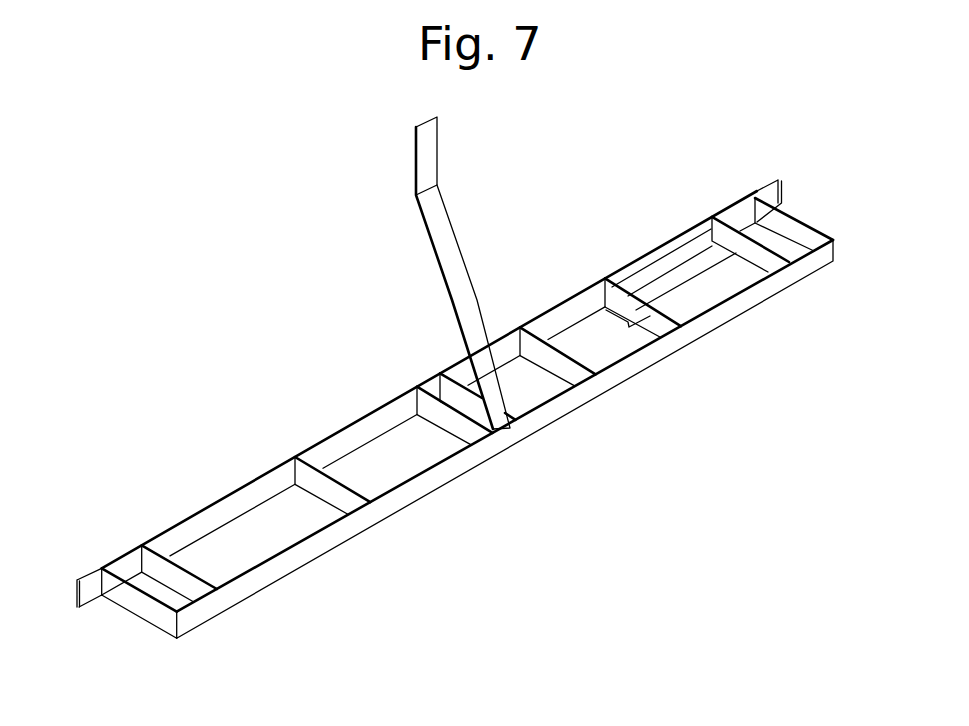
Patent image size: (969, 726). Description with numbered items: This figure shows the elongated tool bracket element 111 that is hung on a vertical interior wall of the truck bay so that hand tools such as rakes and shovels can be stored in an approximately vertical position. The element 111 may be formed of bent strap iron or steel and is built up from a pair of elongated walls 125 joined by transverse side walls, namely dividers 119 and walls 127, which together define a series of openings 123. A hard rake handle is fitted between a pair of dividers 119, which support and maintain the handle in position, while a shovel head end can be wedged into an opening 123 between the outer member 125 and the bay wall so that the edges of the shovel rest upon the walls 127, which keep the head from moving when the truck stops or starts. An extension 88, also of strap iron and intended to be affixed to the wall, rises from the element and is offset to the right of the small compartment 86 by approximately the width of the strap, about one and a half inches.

The elongated element 111 is at (286, 362).
The elongated walls 125 is at (205, 522).
The dividers 119 is at (137, 603).
The small compartment 86 is at (150, 593).
The walls 127 is at (180, 580).
The opening 123 is at (420, 457).
The extension 88 is at (463, 283).